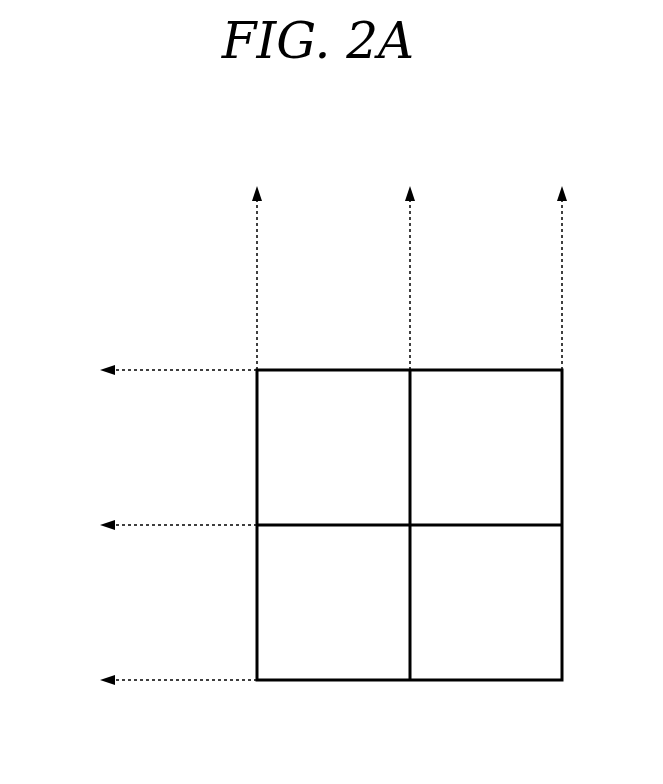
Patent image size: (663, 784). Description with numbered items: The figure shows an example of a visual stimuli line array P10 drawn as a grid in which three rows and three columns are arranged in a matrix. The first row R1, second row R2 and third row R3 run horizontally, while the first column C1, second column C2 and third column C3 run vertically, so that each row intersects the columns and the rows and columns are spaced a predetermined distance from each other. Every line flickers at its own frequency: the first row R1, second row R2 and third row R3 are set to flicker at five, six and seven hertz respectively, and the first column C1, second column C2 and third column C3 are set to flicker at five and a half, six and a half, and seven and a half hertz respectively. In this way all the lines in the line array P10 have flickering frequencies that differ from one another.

The line array P10 is at (240, 338).
The first column C1 is at (257, 237).
The second column C2 is at (410, 237).
The third column C3 is at (562, 237).
The first row R1 is at (141, 368).
The second row R2 is at (141, 523).
The third row R3 is at (141, 679).